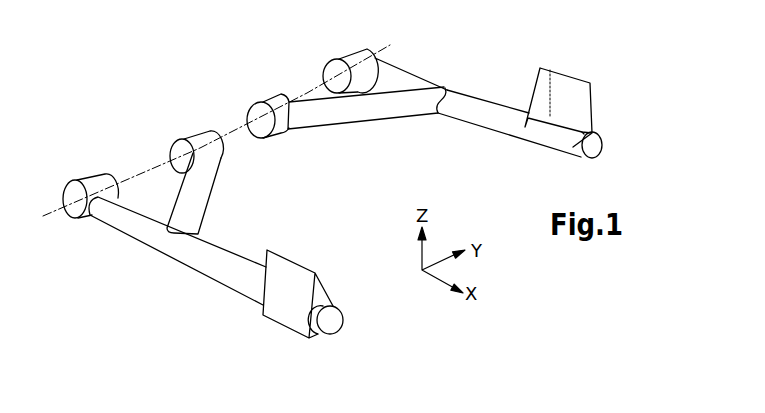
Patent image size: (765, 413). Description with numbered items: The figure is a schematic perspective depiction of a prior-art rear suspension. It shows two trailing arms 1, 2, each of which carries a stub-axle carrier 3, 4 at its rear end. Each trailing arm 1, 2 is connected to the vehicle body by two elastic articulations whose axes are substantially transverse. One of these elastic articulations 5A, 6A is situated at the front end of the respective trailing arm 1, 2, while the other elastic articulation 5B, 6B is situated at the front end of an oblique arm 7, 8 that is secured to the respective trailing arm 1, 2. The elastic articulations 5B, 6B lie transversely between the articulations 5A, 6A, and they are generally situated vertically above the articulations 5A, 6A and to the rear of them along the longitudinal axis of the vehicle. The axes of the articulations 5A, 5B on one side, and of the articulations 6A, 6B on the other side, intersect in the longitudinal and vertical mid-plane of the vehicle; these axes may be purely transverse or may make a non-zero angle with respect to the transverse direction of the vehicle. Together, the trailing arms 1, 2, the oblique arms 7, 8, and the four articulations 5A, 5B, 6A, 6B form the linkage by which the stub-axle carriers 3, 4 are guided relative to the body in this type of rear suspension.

The trailing arm 1 is at (133, 227).
The trailing arm 2 is at (491, 106).
The stub-axle carrier 3 is at (290, 272).
The stub-axle carrier 4 is at (562, 87).
The elastic articulation 5A is at (93, 184).
The elastic articulation 5B is at (190, 138).
The elastic articulation 6A is at (356, 54).
The elastic articulation 6B is at (268, 102).
The oblique arm 7 is at (204, 177).
The oblique arm 8 is at (352, 117).